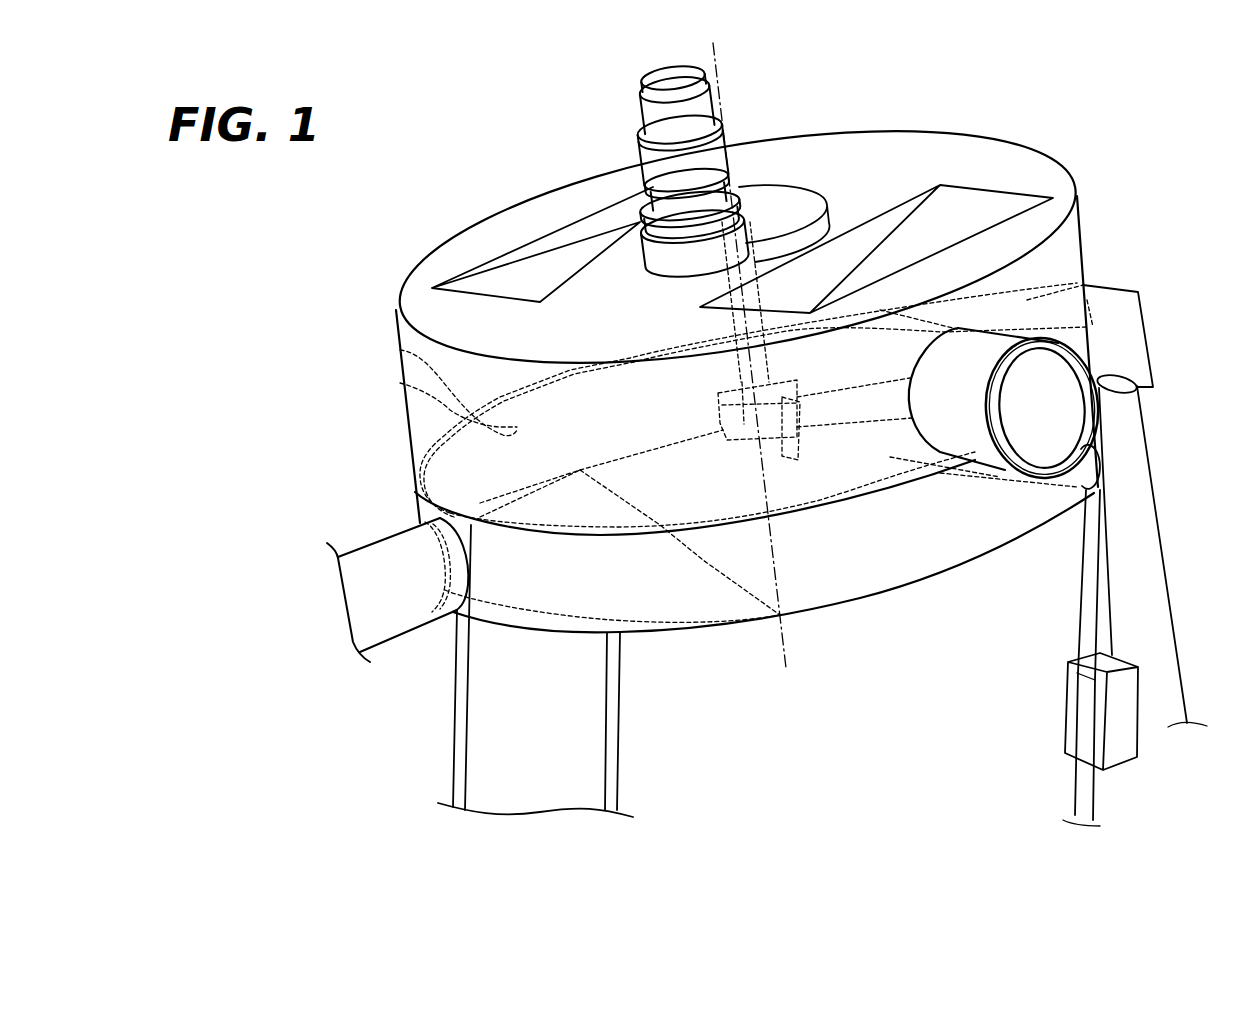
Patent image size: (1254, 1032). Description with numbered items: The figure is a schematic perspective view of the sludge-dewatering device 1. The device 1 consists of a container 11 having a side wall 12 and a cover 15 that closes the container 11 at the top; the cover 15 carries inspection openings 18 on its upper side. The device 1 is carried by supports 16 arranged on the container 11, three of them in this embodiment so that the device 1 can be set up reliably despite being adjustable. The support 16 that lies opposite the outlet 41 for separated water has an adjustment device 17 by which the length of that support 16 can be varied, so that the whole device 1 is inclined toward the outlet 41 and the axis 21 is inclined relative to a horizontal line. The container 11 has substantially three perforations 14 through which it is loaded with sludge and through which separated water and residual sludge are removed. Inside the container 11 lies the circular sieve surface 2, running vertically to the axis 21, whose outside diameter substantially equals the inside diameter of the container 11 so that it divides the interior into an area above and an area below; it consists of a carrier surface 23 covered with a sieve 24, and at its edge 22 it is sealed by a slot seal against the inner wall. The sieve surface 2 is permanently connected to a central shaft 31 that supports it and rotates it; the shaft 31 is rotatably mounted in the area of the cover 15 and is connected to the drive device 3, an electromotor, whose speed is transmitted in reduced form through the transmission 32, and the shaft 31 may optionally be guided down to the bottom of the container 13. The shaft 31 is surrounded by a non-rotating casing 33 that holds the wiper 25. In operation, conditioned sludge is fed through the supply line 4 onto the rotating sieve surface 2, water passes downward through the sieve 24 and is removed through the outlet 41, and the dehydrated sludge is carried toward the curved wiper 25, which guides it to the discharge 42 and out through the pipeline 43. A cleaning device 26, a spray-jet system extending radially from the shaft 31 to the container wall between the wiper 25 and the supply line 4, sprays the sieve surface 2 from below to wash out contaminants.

The device 1 is at (314, 610).
The sieve surface 2 is at (400, 350).
The drive device 3 is at (647, 113).
The supply line 4 is at (922, 448).
The container 11 is at (372, 437).
The side wall 12 is at (407, 427).
The bottom of container 13 is at (1043, 540).
The perforations 14 is at (448, 640).
The cover 15 is at (747, 153).
The supports 16 is at (463, 733).
The adjustment device 17 is at (1123, 715).
The inspection openings 18 is at (520, 270).
The axis 21 is at (782, 652).
The edge 22 is at (413, 482).
The carrier surface 23 is at (525, 457).
The sieve 24 is at (400, 383).
The wiper 25 is at (805, 314).
The cleaning device 26 is at (987, 475).
The shaft 31 is at (647, 190).
The transmission 32 is at (633, 223).
The casing 33 is at (727, 276).
The outlet 41 is at (393, 545).
The discharge 42 is at (1141, 276).
The pipeline 43 is at (1137, 442).